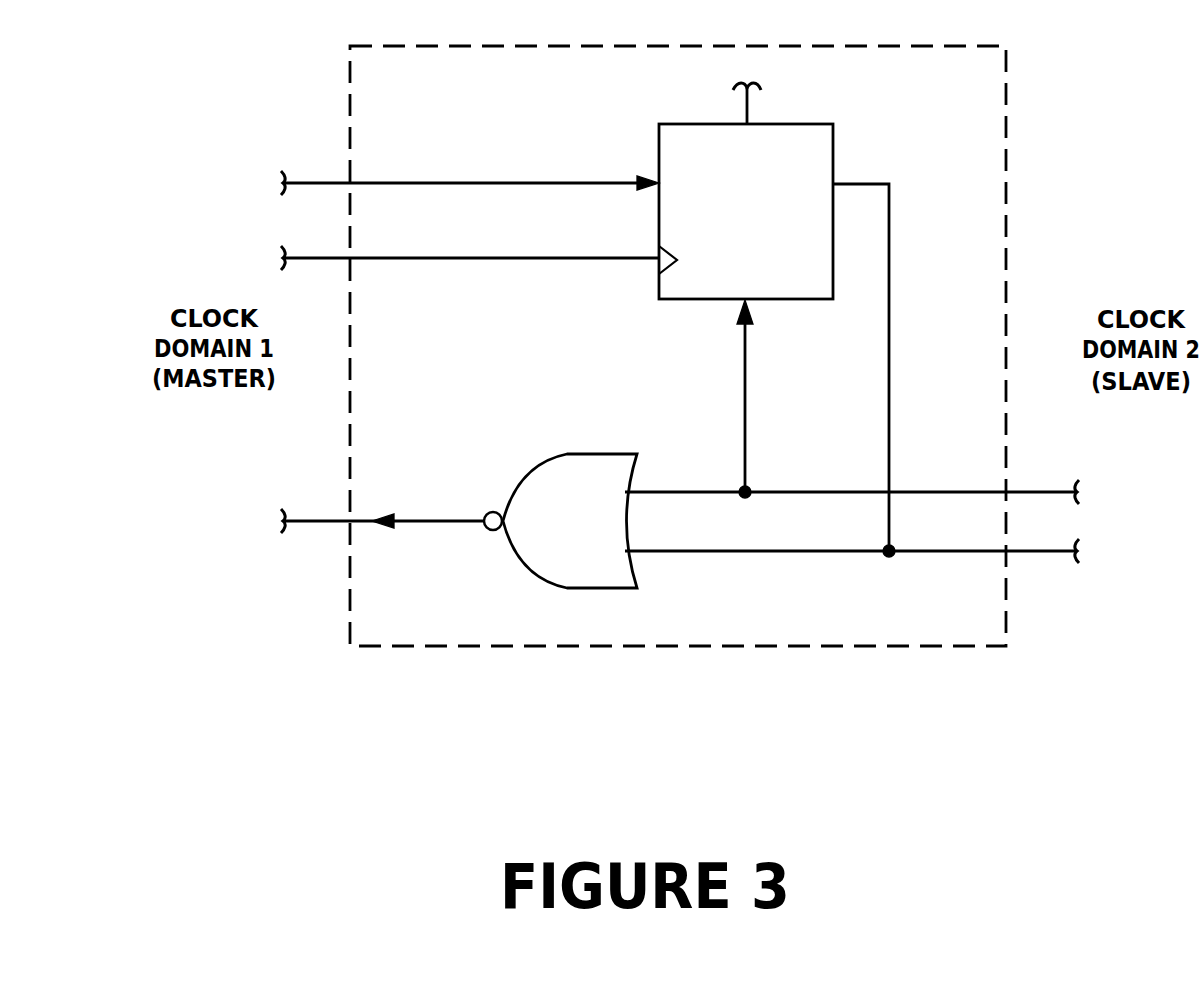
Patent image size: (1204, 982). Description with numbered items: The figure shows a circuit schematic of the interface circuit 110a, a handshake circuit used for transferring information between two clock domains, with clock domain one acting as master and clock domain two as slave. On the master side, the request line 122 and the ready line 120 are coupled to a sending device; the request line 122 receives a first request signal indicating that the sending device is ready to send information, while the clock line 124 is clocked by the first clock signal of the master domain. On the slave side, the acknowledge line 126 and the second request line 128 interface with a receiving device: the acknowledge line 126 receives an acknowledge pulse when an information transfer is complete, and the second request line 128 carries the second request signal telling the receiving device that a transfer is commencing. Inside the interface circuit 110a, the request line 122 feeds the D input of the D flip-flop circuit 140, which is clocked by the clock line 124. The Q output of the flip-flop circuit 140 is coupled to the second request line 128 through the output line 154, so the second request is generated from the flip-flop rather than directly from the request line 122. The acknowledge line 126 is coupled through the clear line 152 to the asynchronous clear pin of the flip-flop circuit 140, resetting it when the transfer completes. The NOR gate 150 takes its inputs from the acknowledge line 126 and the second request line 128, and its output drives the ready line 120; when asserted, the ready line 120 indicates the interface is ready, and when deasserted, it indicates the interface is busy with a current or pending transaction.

The interface circuit 110a is at (978, 82).
The ready line 120 is at (328, 521).
The request line 122 is at (488, 183).
The clock line 124 is at (488, 258).
The acknowledge line 126 is at (1033, 493).
The second request line 128 is at (1035, 553).
The D flip-flop circuit 140 is at (768, 233).
The NOR gate 150 is at (593, 534).
The clear line 152 is at (745, 363).
The output line 154 is at (889, 363).